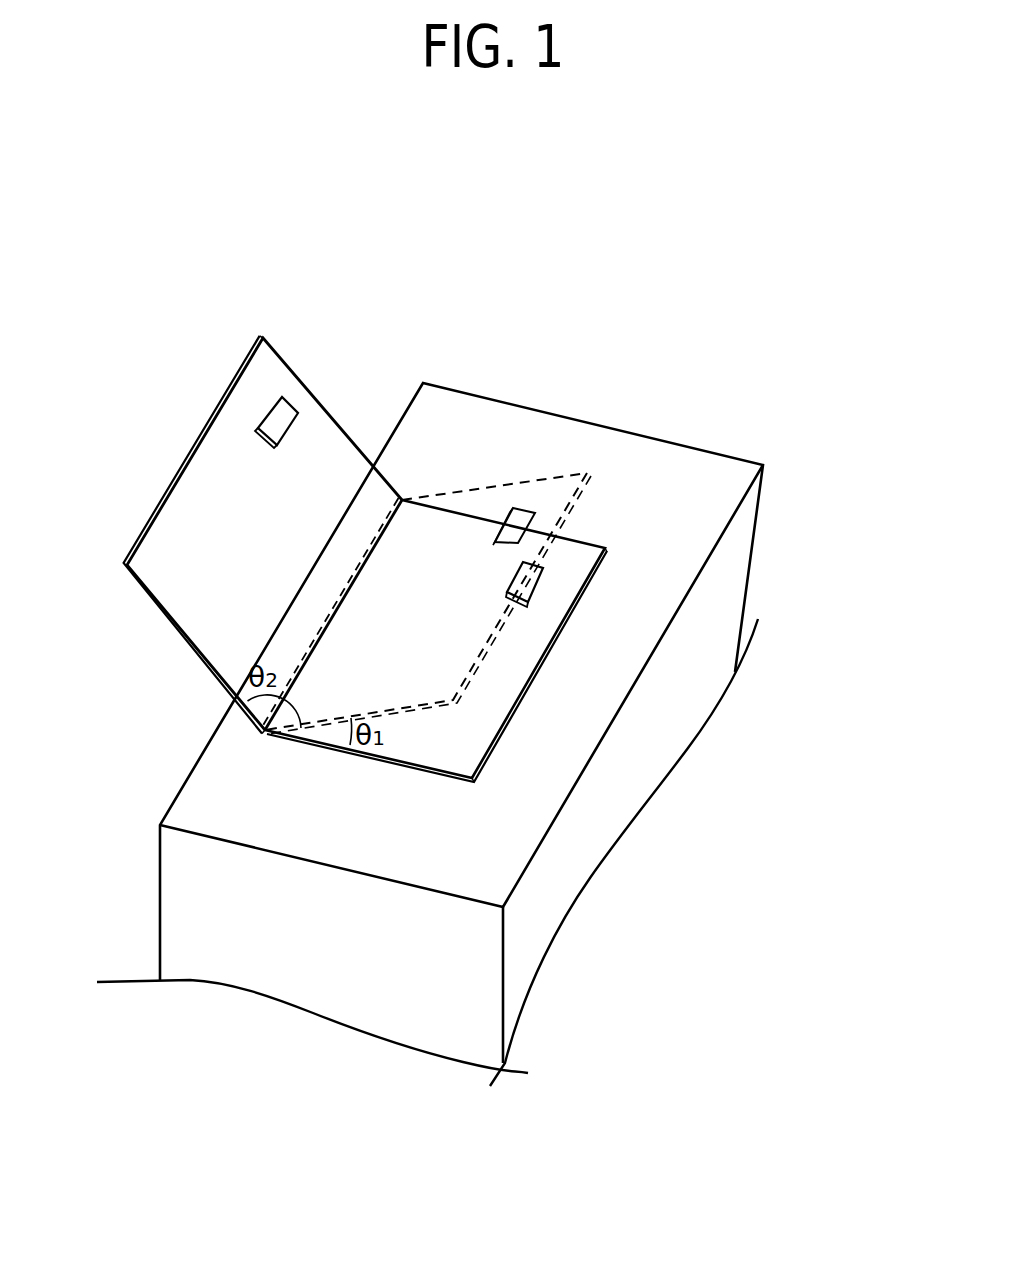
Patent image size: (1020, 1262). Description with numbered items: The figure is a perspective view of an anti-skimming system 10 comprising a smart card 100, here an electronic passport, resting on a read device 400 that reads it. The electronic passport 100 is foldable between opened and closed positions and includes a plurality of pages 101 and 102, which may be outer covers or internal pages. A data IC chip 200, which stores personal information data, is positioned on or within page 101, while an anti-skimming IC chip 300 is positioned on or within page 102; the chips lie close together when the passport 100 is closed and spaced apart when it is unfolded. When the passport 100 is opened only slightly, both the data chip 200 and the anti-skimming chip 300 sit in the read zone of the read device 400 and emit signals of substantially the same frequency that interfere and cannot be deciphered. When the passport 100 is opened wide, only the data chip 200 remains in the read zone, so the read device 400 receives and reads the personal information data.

The anti-skimming system 10 is at (912, 243).
The smart card 100 is at (172, 440).
The page 101 is at (587, 543).
The page 102 is at (243, 368).
The data IC chip 200 is at (540, 587).
The anti-skimming IC chip 300 is at (293, 410).
The read device 400 is at (622, 795).